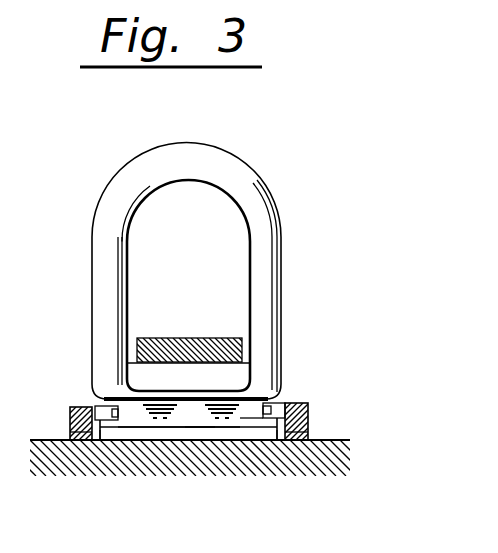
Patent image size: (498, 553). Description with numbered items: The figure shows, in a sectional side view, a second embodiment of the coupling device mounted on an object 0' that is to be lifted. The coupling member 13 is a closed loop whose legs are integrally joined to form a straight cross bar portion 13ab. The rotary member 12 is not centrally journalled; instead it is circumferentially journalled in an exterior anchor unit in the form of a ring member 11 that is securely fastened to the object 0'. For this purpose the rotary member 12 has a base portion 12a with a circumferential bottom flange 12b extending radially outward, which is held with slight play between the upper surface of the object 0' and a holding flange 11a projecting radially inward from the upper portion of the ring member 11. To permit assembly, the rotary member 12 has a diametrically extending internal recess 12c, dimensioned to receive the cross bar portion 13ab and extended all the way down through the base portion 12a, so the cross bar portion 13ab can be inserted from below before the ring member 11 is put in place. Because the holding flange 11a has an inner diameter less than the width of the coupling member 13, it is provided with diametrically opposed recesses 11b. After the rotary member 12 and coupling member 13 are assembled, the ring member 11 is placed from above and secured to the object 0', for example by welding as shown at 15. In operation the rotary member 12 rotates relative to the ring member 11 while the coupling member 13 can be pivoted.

The coupling member 13 is at (120, 183).
The cross bar portion 13ab is at (189, 372).
The rotary member 12 is at (154, 322).
The base portion 12a is at (160, 428).
The circumferential bottom flange 12b is at (101, 441).
The internal recess 12c is at (197, 413).
The holding flange 11a is at (103, 400).
The recesses 11b is at (95, 406).
The ring member 11 is at (69, 407).
The welding 15 is at (72, 439).
The object 0' is at (188, 472).